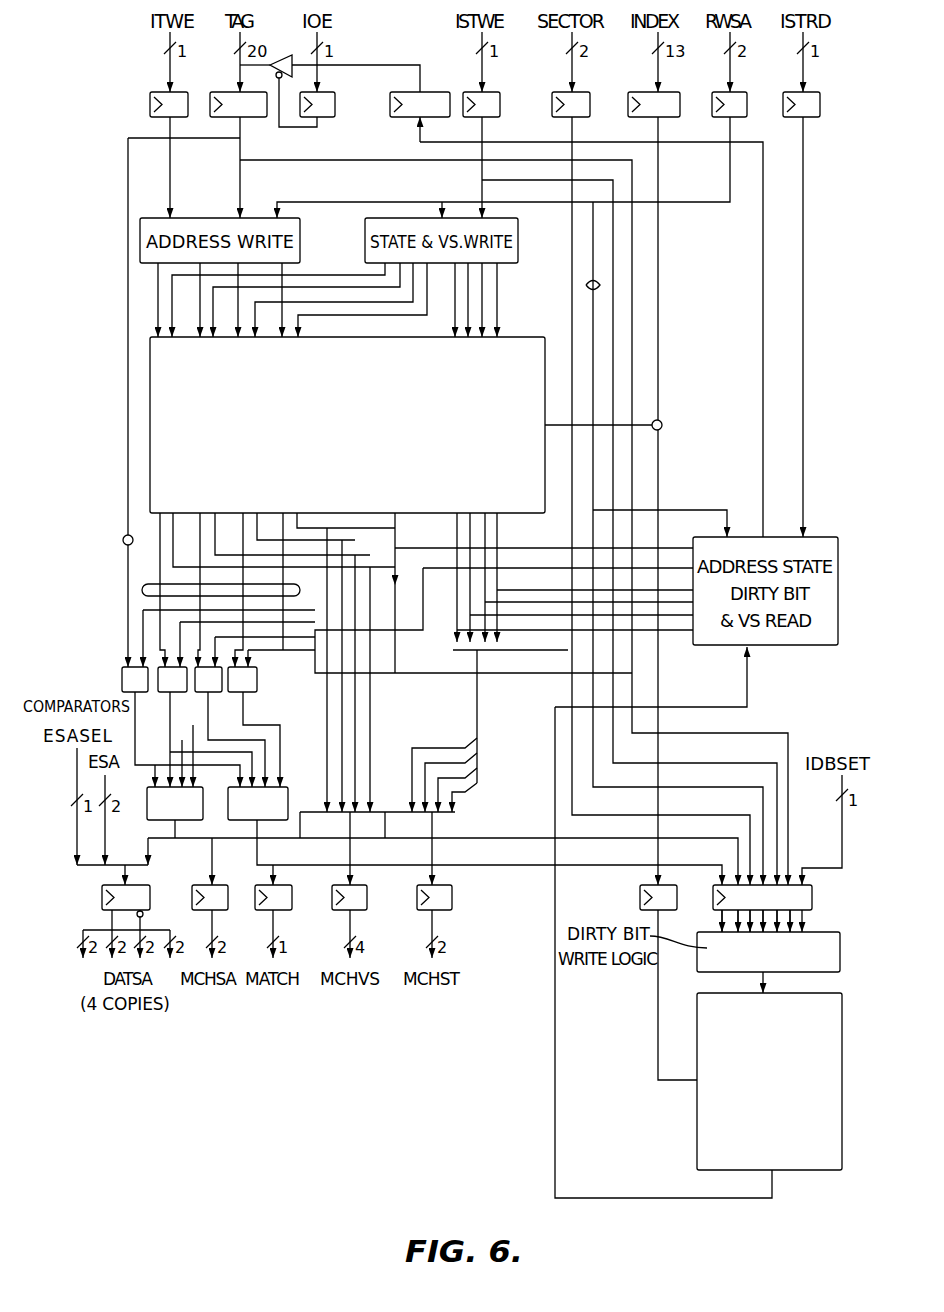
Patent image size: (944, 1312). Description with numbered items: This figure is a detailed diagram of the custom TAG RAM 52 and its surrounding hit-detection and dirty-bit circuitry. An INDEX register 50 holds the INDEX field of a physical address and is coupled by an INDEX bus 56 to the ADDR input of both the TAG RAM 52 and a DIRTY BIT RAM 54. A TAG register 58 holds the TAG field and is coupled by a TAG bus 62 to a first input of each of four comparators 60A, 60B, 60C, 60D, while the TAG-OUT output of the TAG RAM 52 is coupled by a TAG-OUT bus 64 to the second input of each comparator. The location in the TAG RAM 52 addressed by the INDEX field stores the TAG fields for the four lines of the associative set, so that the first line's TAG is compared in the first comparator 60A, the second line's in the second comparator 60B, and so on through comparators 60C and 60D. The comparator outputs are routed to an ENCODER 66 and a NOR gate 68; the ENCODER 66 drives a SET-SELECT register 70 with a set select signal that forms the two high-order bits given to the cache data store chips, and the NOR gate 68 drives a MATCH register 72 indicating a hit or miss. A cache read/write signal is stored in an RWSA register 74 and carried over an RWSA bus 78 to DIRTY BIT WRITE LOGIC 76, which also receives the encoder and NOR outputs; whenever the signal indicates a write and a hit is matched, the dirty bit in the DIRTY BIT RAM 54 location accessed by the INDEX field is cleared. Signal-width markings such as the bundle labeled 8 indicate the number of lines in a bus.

The bus lines 8 is at (471, 721).
The INDEX register 50 is at (660, 92).
The TAG RAM 52 is at (518, 337).
The DIRTY BIT RAM 54 is at (842, 1010).
The INDEX bus 56 is at (662, 422).
The TAG register 58 is at (213, 92).
The comparator 60A is at (122, 688).
The comparator 60B is at (162, 694).
The comparator 60C is at (197, 694).
The comparator 60D is at (257, 694).
The TAG bus 62 is at (123, 546).
The TAG-OUT bus 64 is at (142, 590).
The ENCODER 66 is at (203, 787).
The NOR gate 68 is at (288, 787).
The SET-SELECT register 70 is at (150, 885).
The MATCH register 72 is at (297, 877).
The RWSA register 74 is at (740, 92).
The DIRTY BIT WRITE LOGIC 76 is at (832, 922).
The RWSA bus 78 is at (586, 285).